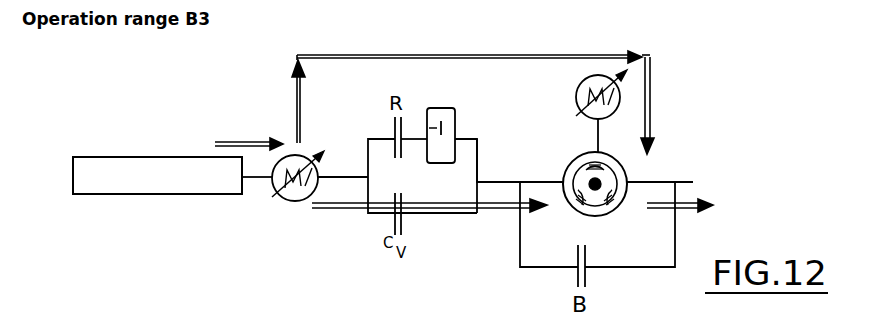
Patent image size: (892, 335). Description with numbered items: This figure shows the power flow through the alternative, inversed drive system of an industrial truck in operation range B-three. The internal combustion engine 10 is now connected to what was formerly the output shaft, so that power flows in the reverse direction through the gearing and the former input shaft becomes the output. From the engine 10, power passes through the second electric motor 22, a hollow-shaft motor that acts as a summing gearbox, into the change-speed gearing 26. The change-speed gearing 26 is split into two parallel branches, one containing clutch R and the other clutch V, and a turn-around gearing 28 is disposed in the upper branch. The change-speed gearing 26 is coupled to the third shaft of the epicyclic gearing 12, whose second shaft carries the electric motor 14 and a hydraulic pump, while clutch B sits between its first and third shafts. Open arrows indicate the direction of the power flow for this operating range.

The internal combustion engine 10 is at (143, 157).
The second electric motor 22 is at (293, 203).
The turn-around gearing 28 is at (450, 108).
The electric motor 14 is at (577, 90).
The epicyclic gearing 12 is at (617, 207).
The change-speed gearing 26 is at (443, 222).